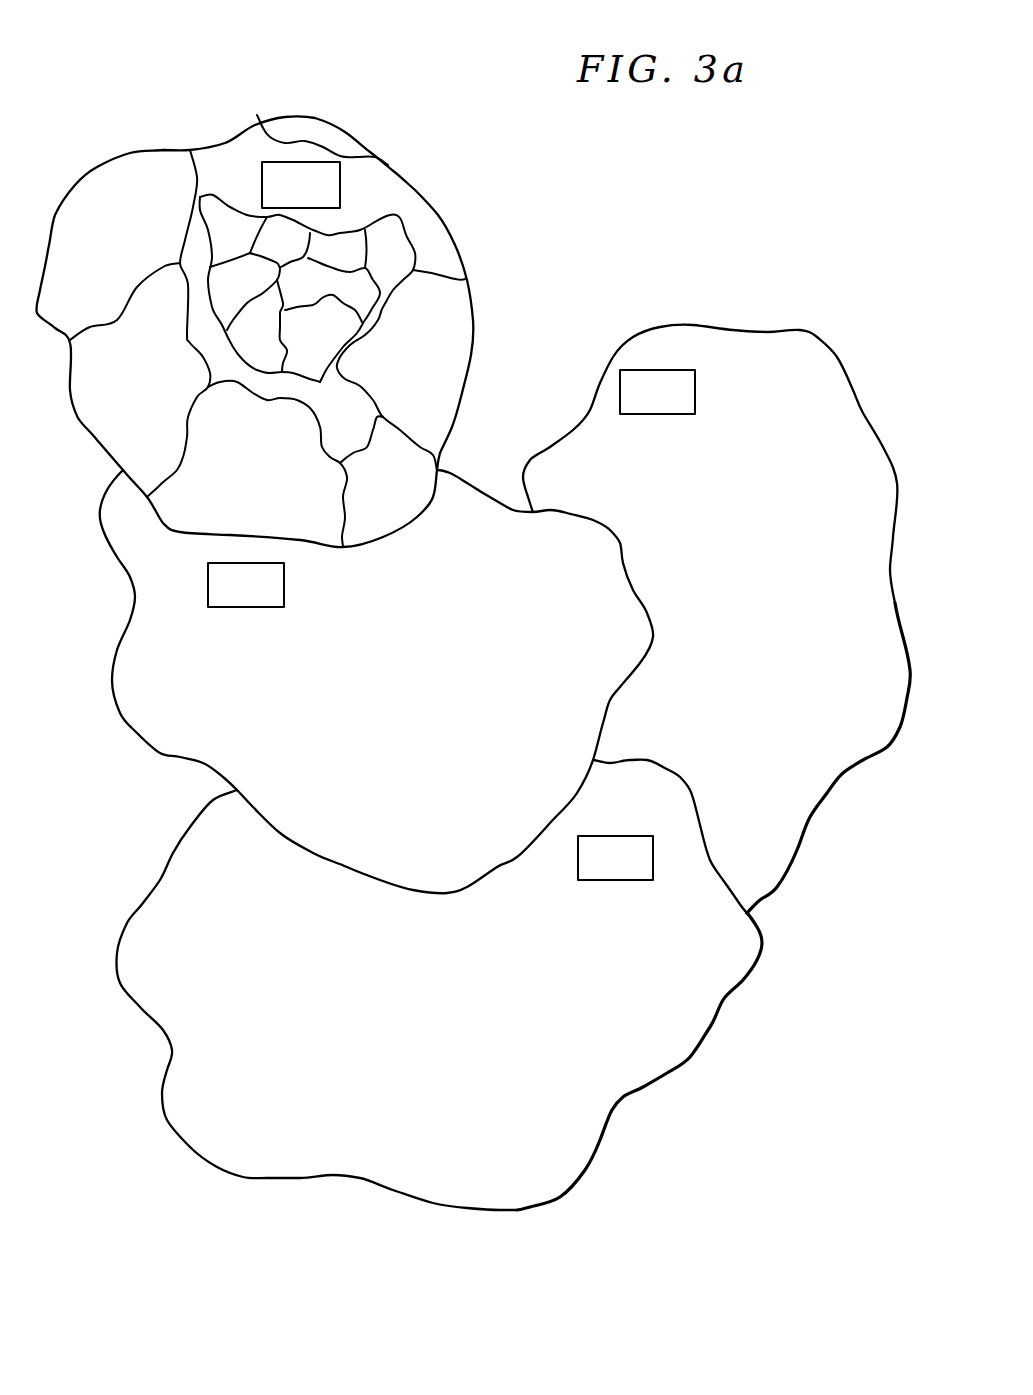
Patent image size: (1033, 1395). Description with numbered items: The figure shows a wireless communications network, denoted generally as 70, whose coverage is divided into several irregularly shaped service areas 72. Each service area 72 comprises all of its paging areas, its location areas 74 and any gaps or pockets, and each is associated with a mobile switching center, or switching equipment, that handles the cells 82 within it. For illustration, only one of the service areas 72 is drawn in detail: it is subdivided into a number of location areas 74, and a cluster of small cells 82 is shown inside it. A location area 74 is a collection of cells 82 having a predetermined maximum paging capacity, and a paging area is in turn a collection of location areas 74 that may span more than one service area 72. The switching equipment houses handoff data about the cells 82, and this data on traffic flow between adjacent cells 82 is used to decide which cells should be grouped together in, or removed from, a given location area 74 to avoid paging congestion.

The wireless communications network 70 is at (634, 160).
The service area 72 is at (220, 143).
The location area 74 is at (98, 173).
The cell 82 is at (410, 198).